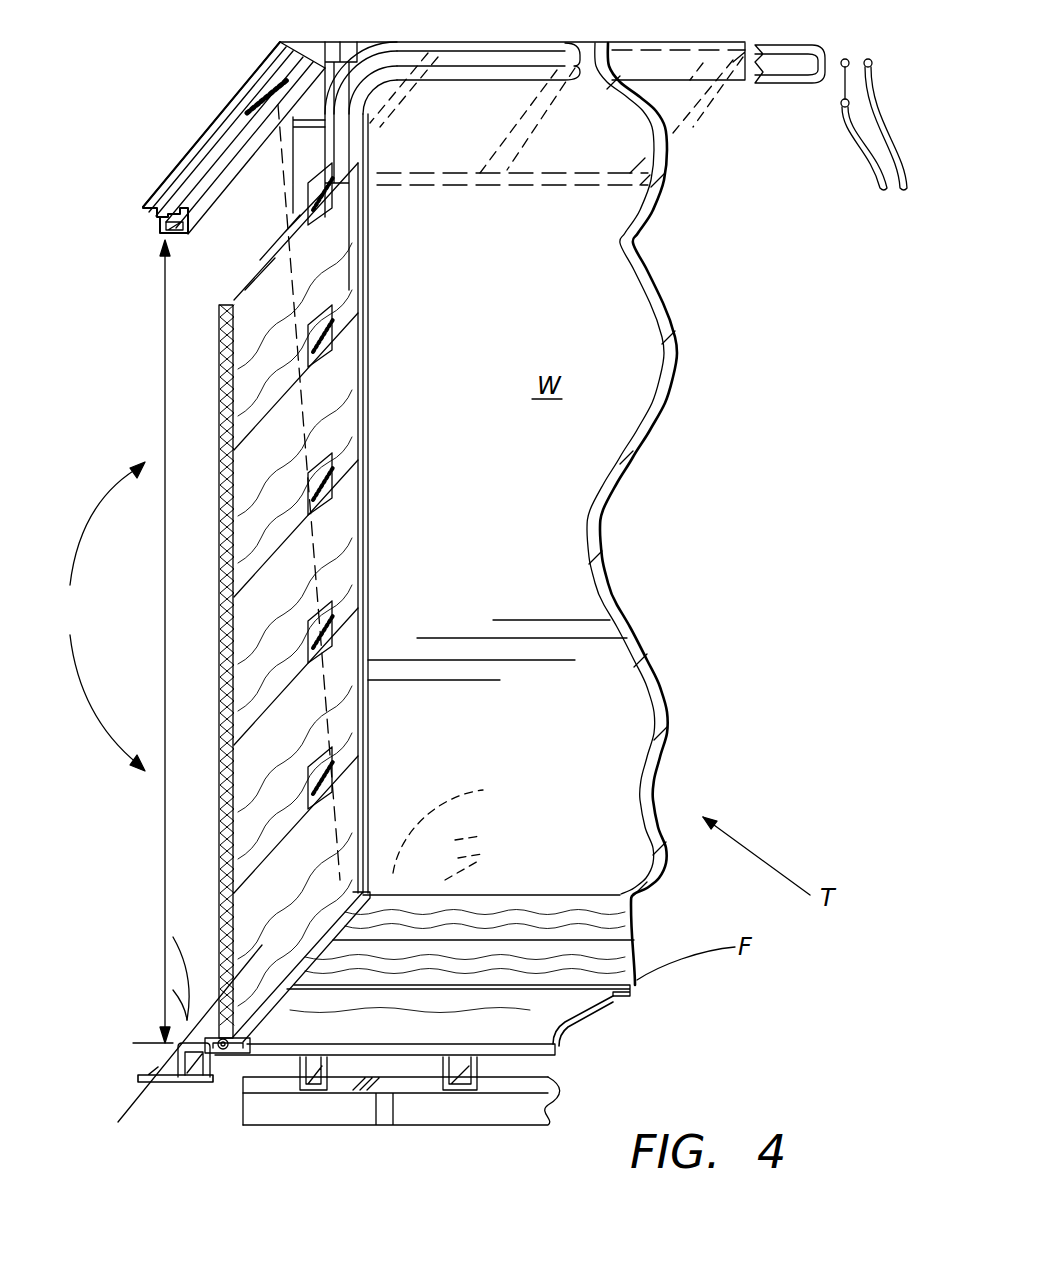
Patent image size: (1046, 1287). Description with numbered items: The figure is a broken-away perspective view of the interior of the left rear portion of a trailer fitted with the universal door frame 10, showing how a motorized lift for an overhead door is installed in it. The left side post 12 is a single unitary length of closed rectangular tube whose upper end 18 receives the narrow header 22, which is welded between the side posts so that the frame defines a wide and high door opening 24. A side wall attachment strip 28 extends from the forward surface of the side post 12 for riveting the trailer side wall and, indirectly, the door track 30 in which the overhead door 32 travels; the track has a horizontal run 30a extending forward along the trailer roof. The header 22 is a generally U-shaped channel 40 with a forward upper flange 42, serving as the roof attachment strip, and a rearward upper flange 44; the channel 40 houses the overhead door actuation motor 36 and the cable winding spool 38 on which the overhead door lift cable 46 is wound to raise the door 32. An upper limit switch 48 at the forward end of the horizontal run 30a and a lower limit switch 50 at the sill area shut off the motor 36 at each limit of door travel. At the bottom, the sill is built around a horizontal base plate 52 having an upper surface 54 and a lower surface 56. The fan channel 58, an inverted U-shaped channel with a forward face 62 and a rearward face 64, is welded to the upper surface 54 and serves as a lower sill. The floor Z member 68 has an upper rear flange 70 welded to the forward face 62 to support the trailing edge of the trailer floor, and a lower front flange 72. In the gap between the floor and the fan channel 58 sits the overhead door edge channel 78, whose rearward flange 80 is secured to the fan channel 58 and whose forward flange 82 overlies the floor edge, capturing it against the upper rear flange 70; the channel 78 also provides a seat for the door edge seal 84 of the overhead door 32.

The universal door frame 10 is at (101, 616).
The left side post 12 is at (312, 172).
The upper end 18 is at (343, 48).
The header 22 is at (188, 160).
The door opening 24 is at (165, 678).
The side wall attachment strip 28 is at (385, 43).
The door track 30 is at (365, 532).
The horizontal run 30a is at (795, 82).
The overhead door 32 is at (348, 560).
The overhead door actuation motor 36 is at (236, 114).
The cable winding spool 38 is at (277, 68).
The U-shaped channel 40 is at (165, 224).
The forward upper flange 42 is at (207, 172).
The rearward upper flange 44 is at (157, 193).
The overhead door lift cable 46 is at (340, 725).
The upper limit switch 48 is at (842, 92).
The lower limit switch 50 is at (455, 829).
The base plate 52 is at (140, 1075).
The upper surface 54 is at (187, 1035).
The lower surface 56 is at (132, 1108).
The fan channel 58 is at (157, 928).
The forward face 62 is at (213, 1073).
The rearward face 64 is at (180, 1040).
The floor Z member 68 is at (240, 1083).
The upper rear flange 70 is at (247, 1077).
The lower front flange 72 is at (273, 1080).
The overhead door edge channel 78 is at (327, 930).
The rearward flange 80 is at (187, 1035).
The forward flange 82 is at (298, 982).
The door edge seal 84 is at (270, 1020).